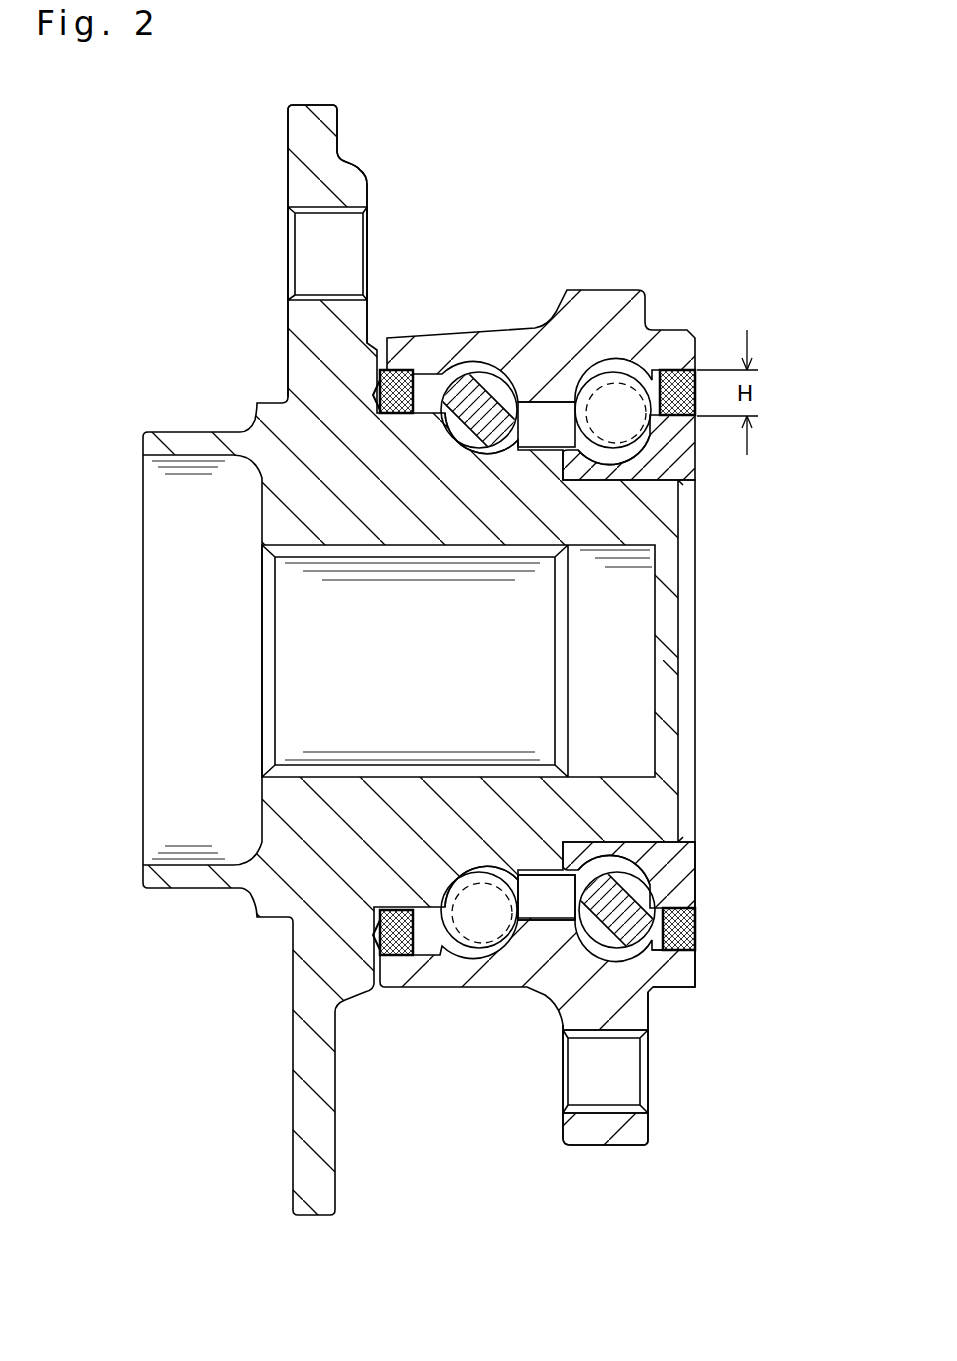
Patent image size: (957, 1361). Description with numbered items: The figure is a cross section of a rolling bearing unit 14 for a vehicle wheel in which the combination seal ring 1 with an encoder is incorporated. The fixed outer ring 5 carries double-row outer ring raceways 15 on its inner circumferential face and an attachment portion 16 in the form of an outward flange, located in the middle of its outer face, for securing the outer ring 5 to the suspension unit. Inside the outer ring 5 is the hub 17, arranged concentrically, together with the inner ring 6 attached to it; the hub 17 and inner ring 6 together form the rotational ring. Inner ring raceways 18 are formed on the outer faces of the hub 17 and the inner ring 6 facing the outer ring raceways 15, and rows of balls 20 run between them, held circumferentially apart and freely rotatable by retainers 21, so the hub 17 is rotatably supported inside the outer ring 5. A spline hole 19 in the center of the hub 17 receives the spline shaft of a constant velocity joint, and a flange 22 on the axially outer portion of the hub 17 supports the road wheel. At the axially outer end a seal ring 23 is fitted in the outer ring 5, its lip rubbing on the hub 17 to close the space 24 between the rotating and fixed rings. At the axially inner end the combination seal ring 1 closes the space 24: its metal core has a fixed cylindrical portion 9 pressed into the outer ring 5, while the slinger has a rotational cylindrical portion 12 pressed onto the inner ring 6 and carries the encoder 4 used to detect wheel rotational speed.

The combination seal ring with an encoder 1 is at (702, 935).
The encoder 4 is at (698, 920).
The outer ring 5 is at (590, 305).
The inner ring 6 is at (685, 458).
The fixed cylindrical portion 9 is at (677, 950).
The rotational cylindrical portion 12 is at (697, 890).
The rolling bearing unit 14 is at (284, 292).
The outer ring raceways 15 is at (488, 372).
The attachment portion 16 is at (583, 1130).
The hub 17 is at (308, 388).
The inner ring raceways 18 is at (470, 450).
The spline hole 19 is at (310, 558).
The balls 20 is at (550, 420).
The retainers 21 is at (498, 872).
The flange 22 is at (300, 130).
The seal ring 23 is at (378, 353).
The space 24 is at (657, 372).